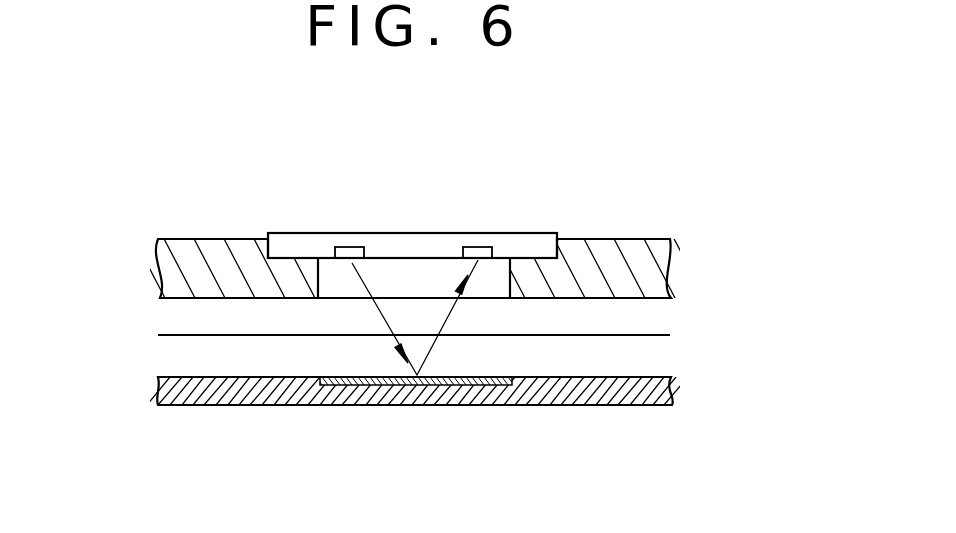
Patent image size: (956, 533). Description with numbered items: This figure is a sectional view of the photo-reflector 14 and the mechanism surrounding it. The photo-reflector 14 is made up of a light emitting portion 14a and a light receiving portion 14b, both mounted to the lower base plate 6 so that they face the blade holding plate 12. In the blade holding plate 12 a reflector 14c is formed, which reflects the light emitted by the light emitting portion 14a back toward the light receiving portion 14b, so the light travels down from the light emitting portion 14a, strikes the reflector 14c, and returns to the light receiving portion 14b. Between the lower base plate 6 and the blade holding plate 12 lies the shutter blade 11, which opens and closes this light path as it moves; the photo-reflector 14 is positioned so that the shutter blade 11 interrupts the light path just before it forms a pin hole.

The lower base plate 6 is at (619, 239).
The photo-reflector 14 is at (438, 233).
The light emitting portion 14a is at (357, 247).
The light receiving portion 14b is at (477, 247).
The reflector 14c is at (353, 377).
The shutter blade 11 is at (650, 335).
The blade holding plate 12 is at (520, 406).